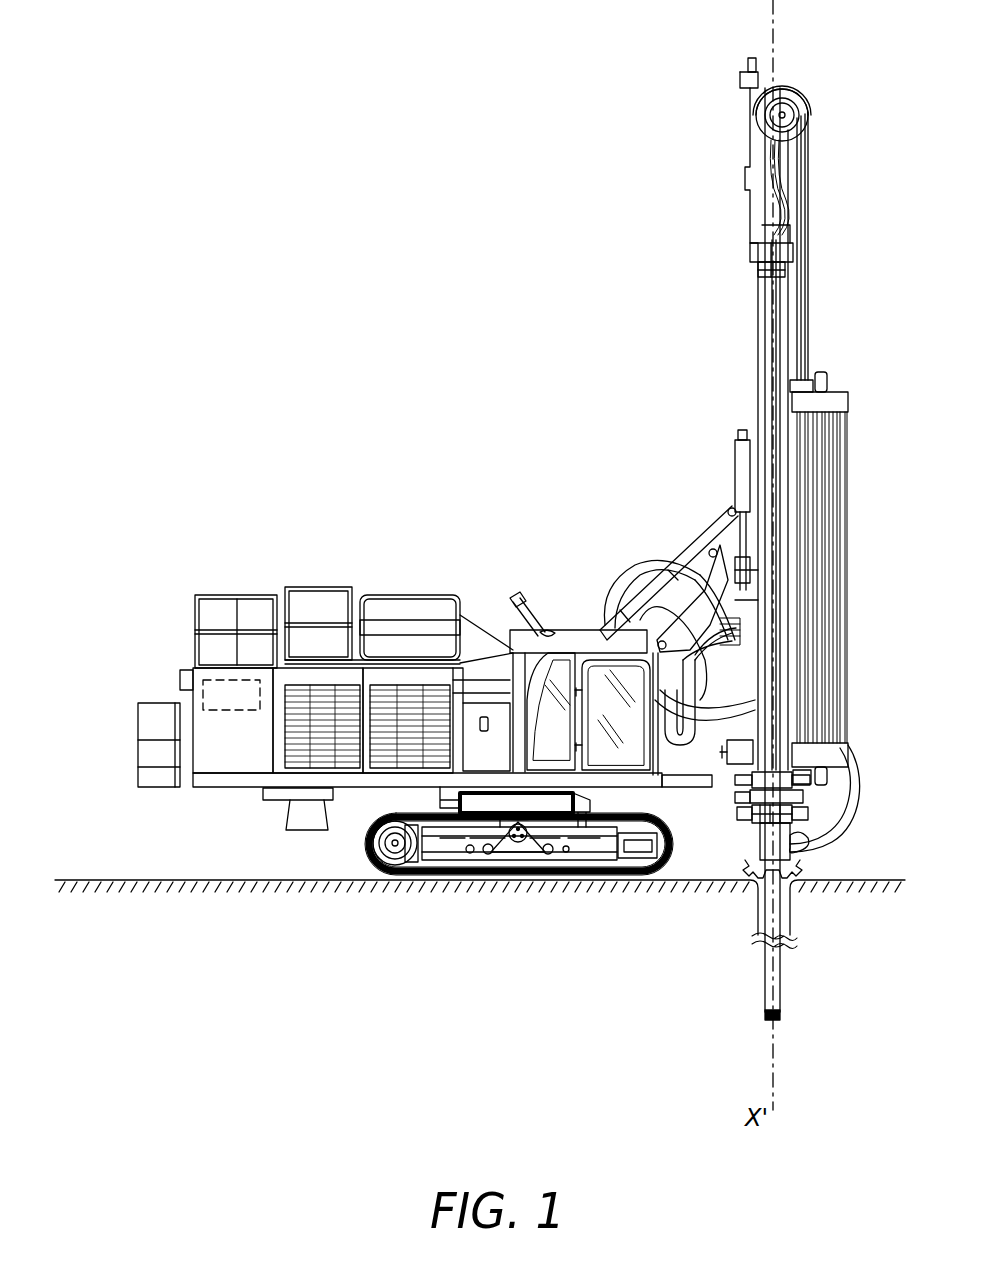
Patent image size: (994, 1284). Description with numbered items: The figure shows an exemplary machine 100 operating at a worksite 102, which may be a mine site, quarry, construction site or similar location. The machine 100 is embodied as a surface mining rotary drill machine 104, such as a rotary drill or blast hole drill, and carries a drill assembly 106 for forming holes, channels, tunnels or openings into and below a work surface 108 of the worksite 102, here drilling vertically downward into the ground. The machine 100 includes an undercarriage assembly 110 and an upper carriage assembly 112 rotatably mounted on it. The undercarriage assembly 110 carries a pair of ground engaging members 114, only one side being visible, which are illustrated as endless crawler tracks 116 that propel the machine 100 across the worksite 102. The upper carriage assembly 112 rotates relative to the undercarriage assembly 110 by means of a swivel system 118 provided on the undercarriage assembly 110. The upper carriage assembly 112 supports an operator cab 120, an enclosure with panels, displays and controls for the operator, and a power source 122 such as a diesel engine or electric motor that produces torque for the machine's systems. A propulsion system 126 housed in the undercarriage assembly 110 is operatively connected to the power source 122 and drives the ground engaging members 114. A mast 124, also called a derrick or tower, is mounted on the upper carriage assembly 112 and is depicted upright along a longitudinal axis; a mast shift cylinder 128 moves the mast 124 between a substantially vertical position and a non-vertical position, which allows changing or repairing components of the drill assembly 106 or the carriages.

The machine 100 is at (288, 94).
The worksite 102 is at (84, 880).
The surface mining rotary drill machine 104 is at (440, 366).
The drill assembly 106 is at (806, 908).
The work surface 108 is at (803, 868).
The undercarriage assembly 110 is at (413, 797).
The upper carriage assembly 112 is at (218, 793).
The ground engaging members 114 is at (516, 882).
The endless crawler tracks 116 is at (366, 880).
The swivel system 118 is at (588, 801).
The operator cab 120 is at (588, 670).
The power source 122 is at (196, 690).
The mast 124 is at (730, 496).
The propulsion system 126 is at (676, 878).
The mast shift cylinder 128 is at (688, 532).